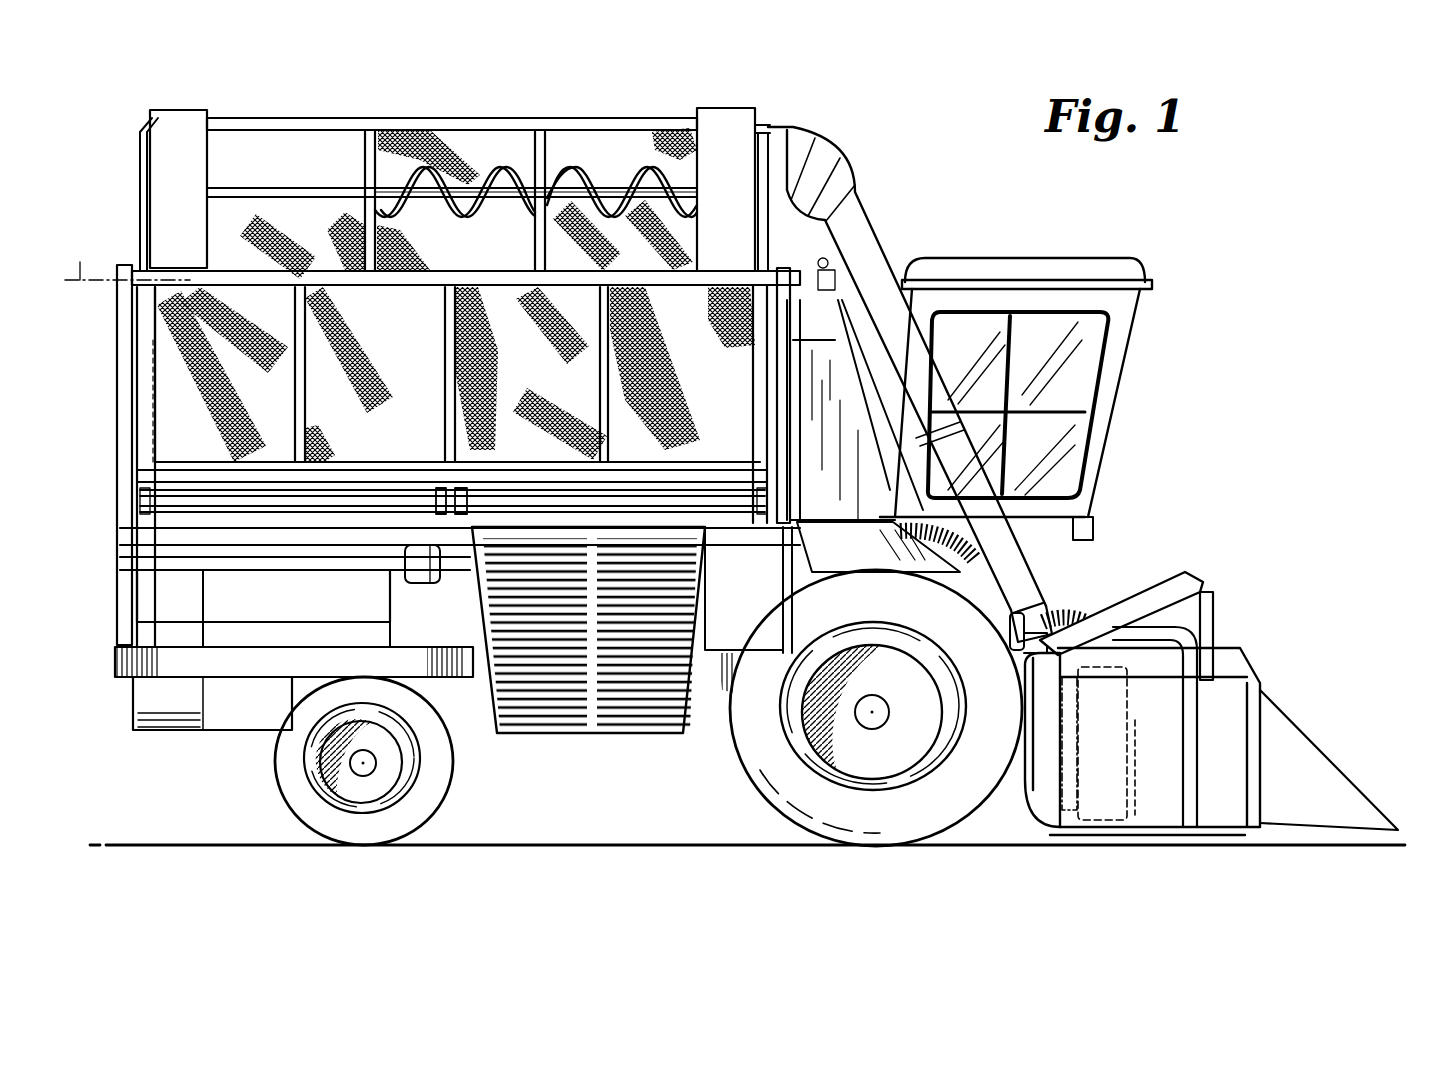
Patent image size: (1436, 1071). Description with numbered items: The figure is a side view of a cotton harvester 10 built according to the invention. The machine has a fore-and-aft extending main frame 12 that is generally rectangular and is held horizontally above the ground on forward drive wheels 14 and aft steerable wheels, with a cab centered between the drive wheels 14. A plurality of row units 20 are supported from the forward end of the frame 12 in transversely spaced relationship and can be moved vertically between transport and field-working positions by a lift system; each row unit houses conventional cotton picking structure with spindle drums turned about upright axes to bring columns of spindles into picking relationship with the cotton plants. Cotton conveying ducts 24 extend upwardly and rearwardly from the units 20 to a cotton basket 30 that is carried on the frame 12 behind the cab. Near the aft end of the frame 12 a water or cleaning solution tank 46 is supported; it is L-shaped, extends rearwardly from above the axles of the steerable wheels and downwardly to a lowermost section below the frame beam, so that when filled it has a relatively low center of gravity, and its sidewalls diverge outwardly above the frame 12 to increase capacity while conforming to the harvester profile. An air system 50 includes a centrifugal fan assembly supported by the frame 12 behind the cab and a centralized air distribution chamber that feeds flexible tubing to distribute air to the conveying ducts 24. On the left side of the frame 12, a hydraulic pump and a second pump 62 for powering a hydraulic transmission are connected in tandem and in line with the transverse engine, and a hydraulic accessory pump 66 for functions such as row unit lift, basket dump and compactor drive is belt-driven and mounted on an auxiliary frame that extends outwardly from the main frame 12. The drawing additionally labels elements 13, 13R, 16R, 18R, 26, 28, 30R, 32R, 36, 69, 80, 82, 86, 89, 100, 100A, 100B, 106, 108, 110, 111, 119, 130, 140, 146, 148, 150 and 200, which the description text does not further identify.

The cotton harvester 10 is at (1205, 252).
The main frame 12 is at (112, 665).
The frame rail 13 is at (462, 682).
The right rear frame member 13R is at (280, 665).
The forward drive wheels 14 is at (170, 543).
The right front wheel 16R is at (760, 810).
The right rear wheel 18R is at (280, 798).
The row units 20 is at (1262, 660).
The cotton conveying ducts 24 is at (1052, 585).
The air duct / chute 26 is at (798, 140).
The operator cab 28 is at (1130, 350).
The cotton basket 30 is at (118, 252).
The right side wall of basket 30R is at (175, 435).
The right lower rail 32R is at (780, 370).
The corner post 36 is at (122, 268).
The water or cleaning solution tank 46 is at (350, 560).
The air system 50 is at (582, 738).
The second pump 62 is at (222, 130).
The hydraulic accessory pump 66 is at (740, 465).
The side rail 69 is at (145, 396).
The basket floor 80 is at (345, 462).
The upper rail 82 is at (400, 285).
The vertical dividers 86 is at (600, 322).
The cotton 89 is at (207, 330).
The floor rail assembly 100 is at (180, 498).
The rail end actuator 100A is at (410, 512).
The rail clamp 100B is at (530, 512).
The corner cap 106 is at (150, 120).
The rear post 108 is at (770, 118).
The front post 110 is at (148, 182).
The post rail 111 is at (760, 222).
The end panel 119 is at (165, 150).
The basket extension 130 is at (330, 160).
The auger assembly 140 is at (500, 128).
The auger flighting 146 is at (378, 140).
The cotton in extension 148 is at (455, 150).
The intermediate post 150 is at (540, 120).
The reference plane 200 is at (119, 254).